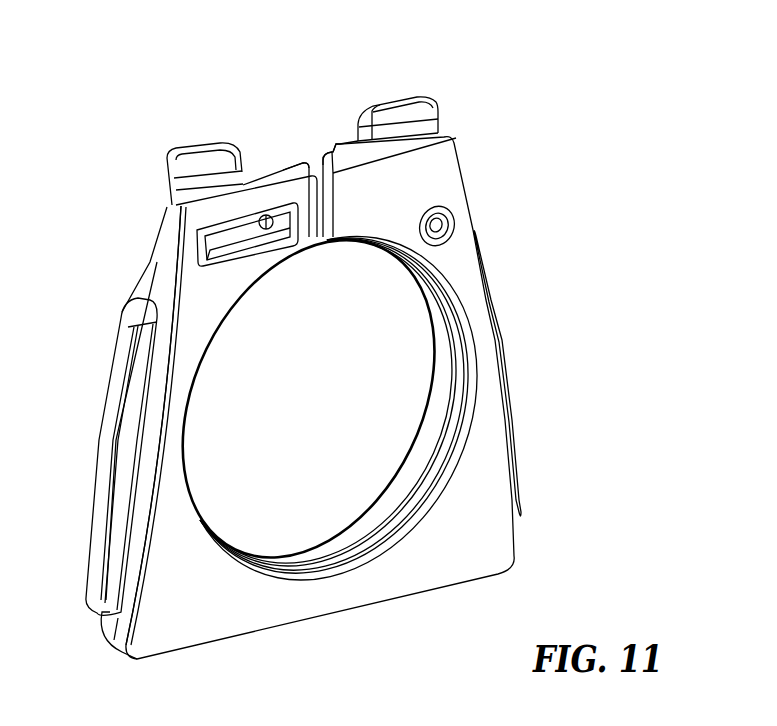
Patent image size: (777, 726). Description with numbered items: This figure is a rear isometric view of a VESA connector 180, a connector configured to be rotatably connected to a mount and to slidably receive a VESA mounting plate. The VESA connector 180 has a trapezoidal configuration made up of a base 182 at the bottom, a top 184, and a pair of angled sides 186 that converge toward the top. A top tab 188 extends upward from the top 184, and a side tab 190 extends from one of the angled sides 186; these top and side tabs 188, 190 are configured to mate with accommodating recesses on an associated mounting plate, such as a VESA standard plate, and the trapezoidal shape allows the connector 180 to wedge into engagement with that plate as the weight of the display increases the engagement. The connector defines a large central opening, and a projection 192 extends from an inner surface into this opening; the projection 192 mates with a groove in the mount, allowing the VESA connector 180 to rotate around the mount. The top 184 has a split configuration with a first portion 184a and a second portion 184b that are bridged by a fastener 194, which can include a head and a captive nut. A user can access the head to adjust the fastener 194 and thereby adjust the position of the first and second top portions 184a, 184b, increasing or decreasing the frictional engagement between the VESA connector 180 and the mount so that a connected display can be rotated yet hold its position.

The VESA connector 180 is at (321, 345).
The base 182 is at (467, 587).
The top 184 is at (173, 196).
The first portion 184a is at (338, 152).
The second portion 184b is at (283, 168).
The angled sides 186 is at (156, 257).
The top tab 188 is at (408, 114).
The side tab 190 is at (107, 445).
The projection 192 is at (453, 425).
The fastener 194 is at (276, 220).